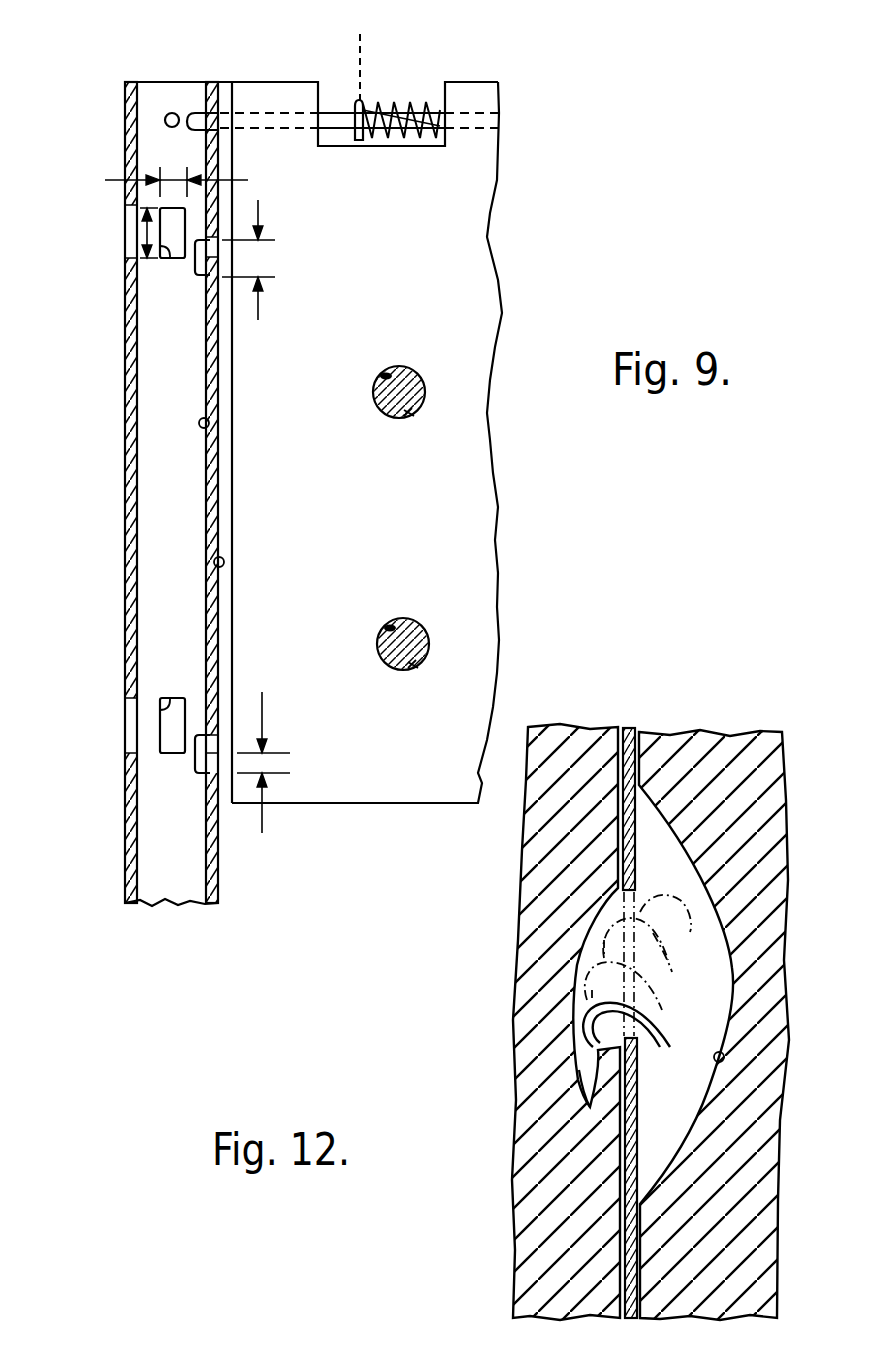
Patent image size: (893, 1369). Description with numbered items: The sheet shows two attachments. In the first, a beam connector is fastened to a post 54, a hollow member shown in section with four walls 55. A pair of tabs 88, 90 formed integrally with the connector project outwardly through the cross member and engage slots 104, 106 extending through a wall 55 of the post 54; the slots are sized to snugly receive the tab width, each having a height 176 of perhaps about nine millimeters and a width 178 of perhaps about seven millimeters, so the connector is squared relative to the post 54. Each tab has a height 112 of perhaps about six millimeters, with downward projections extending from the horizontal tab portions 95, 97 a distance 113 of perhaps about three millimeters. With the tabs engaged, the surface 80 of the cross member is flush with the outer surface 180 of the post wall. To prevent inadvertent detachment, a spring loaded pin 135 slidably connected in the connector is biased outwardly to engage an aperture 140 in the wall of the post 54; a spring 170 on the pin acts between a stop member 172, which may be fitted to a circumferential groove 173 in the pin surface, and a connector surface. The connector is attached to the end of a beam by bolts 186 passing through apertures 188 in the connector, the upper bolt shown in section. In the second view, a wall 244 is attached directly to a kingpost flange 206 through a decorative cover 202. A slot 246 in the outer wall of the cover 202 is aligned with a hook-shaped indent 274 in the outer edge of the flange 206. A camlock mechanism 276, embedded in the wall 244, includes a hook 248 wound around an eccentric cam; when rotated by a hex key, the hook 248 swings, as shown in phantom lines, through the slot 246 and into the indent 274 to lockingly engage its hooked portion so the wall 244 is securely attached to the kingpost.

In FIG. 9, the post 54 is at (152, 81).
In FIG. 9, the wall 55 is at (170, 92).
In FIG. 9, the aperture 140 is at (174, 113).
In FIG. 9, the spring loaded pin 135 is at (335, 100).
In FIG. 9, the circumferential groove 173 is at (360, 32).
In FIG. 9, the spring 170 is at (385, 110).
In FIG. 9, the stop member 172 is at (355, 138).
In FIG. 9, the slot width 178 is at (175, 180).
In FIG. 9, the slot height 176 is at (147, 235).
In FIG. 9, the slot 104 is at (168, 256).
In FIG. 9, the tab 88 is at (197, 278).
In FIG. 9, the horizontal tab portion 95 is at (210, 237).
In FIG. 9, the tab height 112 is at (253, 262).
In FIG. 9, the surface of the cross member 80 is at (208, 422).
In FIG. 9, the outer surface of the wall 180 is at (214, 561).
In FIG. 9, the apertures 188 is at (401, 366).
In FIG. 9, the bolts 186 is at (408, 418).
In FIG. 9, the horizontal tab portion 97 is at (210, 740).
In FIG. 9, the projection distance 113 is at (265, 763).
In FIG. 9, the slot 106 is at (166, 712).
In FIG. 9, the tab 90 is at (200, 774).
In FIG. 12, the flange 206 is at (585, 730).
In FIG. 12, the decorative cover 202 is at (631, 730).
In FIG. 12, the wall 244 is at (737, 748).
In FIG. 12, the slot 246 is at (648, 1012).
In FIG. 12, the hook 248 is at (586, 1022).
In FIG. 12, the hook-shaped indent 274 is at (590, 1093).
In FIG. 12, the camlock mechanism 276 is at (724, 1058).